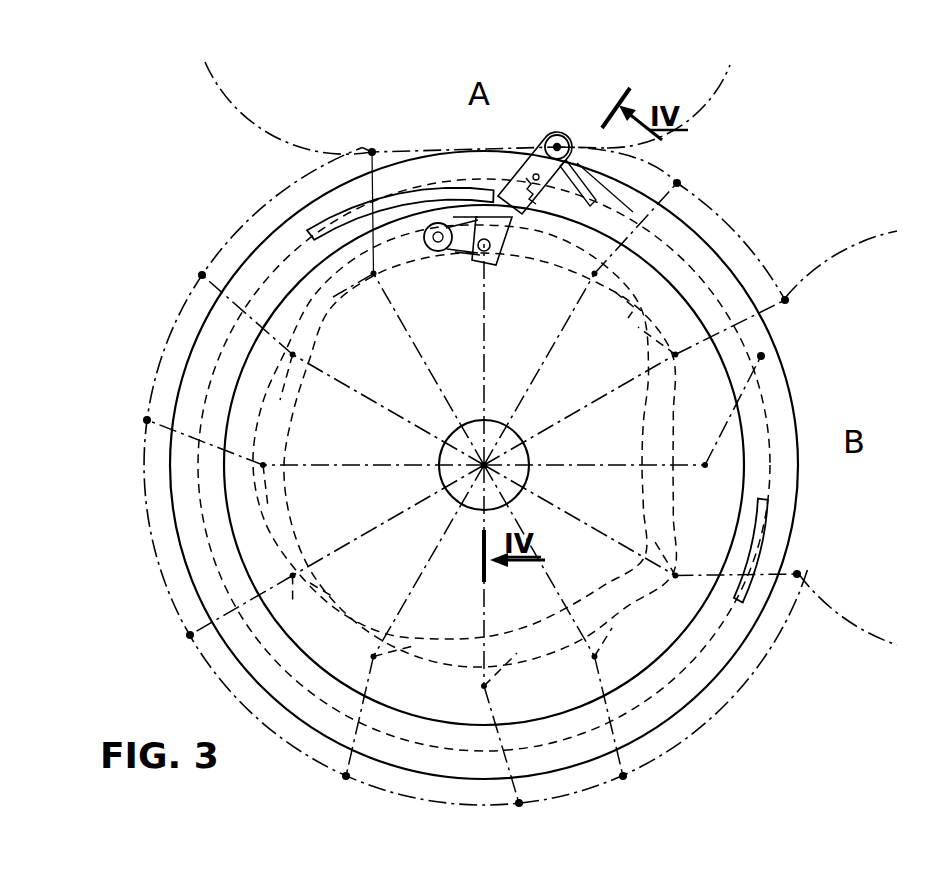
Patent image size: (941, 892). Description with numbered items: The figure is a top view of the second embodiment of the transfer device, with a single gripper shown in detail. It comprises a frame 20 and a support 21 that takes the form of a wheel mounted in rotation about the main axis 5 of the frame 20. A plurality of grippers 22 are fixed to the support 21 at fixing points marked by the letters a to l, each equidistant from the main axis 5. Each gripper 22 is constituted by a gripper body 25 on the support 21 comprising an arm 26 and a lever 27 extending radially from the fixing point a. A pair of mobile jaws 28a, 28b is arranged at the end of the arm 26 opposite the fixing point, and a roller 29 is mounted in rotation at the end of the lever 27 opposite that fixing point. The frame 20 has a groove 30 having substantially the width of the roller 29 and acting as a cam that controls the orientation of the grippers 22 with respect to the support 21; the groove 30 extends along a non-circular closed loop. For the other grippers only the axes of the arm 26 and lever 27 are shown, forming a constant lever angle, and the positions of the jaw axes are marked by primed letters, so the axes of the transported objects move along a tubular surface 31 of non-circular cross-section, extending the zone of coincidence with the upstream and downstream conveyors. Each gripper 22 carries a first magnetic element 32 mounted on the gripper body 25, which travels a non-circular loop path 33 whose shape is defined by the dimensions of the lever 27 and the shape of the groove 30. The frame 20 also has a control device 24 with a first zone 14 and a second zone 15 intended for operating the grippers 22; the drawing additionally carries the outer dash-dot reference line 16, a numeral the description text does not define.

The main axis 5 is at (492, 462).
The first zone 14 is at (333, 222).
The second zone 15 is at (760, 553).
The pitch circle of supporting ring 16 is at (700, 185).
The frame 20 is at (673, 700).
The support 21 is at (606, 502).
The grippers 22 is at (541, 120).
The control device 24 is at (556, 381).
The gripper body 25 is at (474, 208).
The arm 26 is at (492, 200).
The lever 27 is at (428, 225).
The mobile jaw 28a is at (600, 188).
The mobile jaw 28b is at (528, 185).
The roller 29 is at (418, 232).
The groove 30 is at (745, 240).
The tubular surface 31 is at (763, 263).
The first magnetic element 32 is at (640, 212).
The path 33 is at (273, 273).